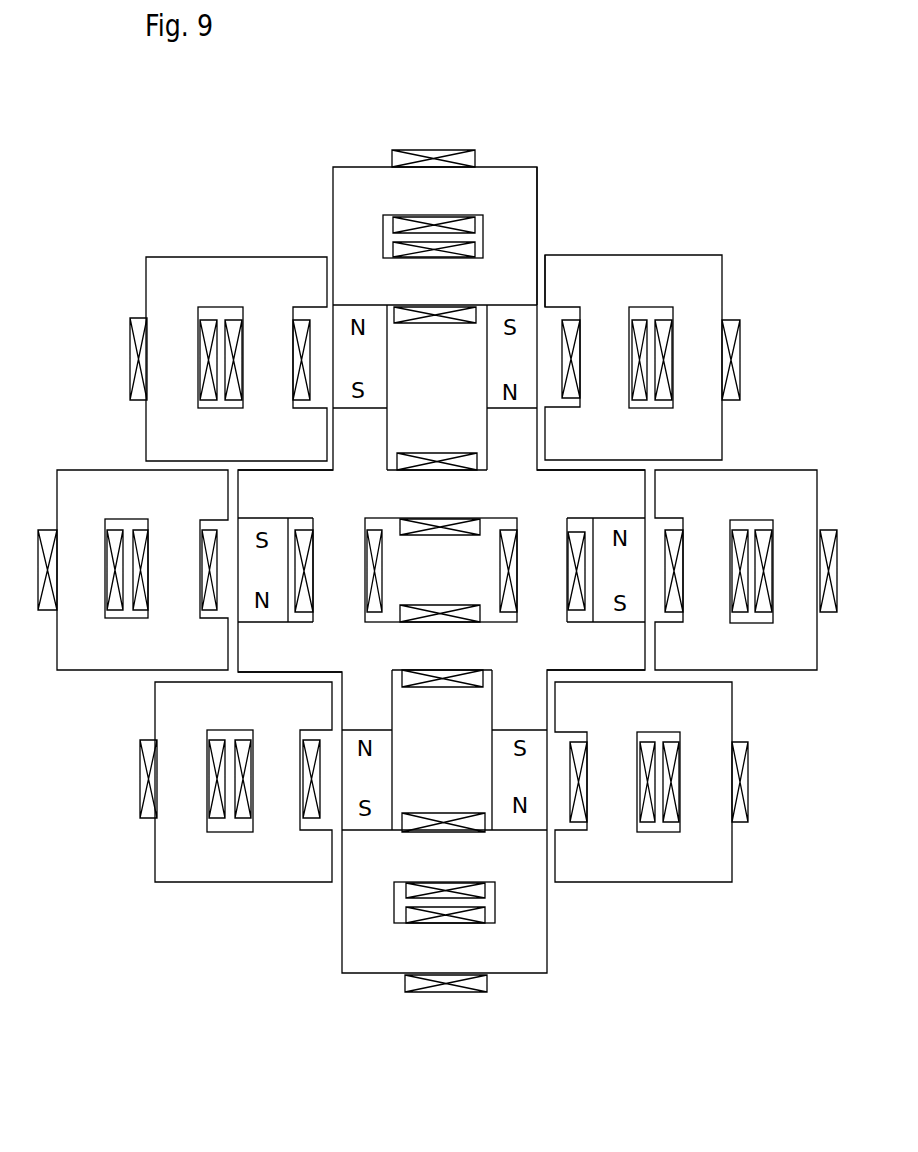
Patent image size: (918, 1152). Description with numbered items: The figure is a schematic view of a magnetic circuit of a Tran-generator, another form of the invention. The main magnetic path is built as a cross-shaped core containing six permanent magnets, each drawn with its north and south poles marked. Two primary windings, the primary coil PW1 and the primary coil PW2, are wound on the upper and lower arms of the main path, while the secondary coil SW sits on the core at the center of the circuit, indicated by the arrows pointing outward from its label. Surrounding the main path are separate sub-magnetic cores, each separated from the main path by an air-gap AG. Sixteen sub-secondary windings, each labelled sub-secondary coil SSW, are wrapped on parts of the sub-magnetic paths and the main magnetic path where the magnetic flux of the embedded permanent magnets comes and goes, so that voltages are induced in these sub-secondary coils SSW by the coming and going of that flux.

The sub-secondary coil SSW is at (388, 245).
The secondary coil SW is at (497, 565).
The primary coil of winding 1 PW1 is at (414, 454).
The primary coil of winding 2 PW2 is at (411, 689).
The air-gap AG is at (544, 252).